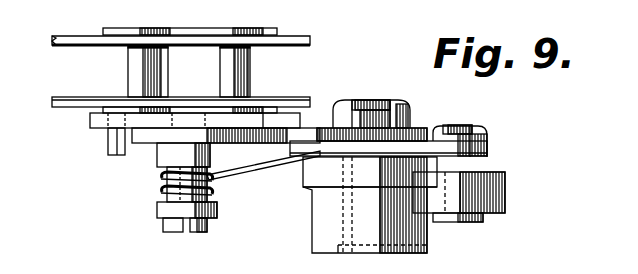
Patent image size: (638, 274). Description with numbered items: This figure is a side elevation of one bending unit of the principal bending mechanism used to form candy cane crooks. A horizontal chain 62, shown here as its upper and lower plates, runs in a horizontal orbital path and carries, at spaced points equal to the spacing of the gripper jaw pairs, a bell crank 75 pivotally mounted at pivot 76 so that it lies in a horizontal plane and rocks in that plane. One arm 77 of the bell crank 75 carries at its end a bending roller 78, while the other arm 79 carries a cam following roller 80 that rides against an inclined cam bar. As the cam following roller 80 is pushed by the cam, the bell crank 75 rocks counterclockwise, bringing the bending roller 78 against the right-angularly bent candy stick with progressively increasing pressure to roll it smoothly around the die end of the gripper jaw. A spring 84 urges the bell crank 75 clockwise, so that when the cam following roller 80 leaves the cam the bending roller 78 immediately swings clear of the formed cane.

The chain 62 is at (305, 35).
The bell crank 75 is at (314, 124).
The pivot 76 is at (200, 232).
The arm 77 is at (417, 128).
The bending roller 78 is at (427, 240).
The other arm 79 is at (487, 147).
The cam following roller 80 is at (505, 187).
The spring 84 is at (247, 170).